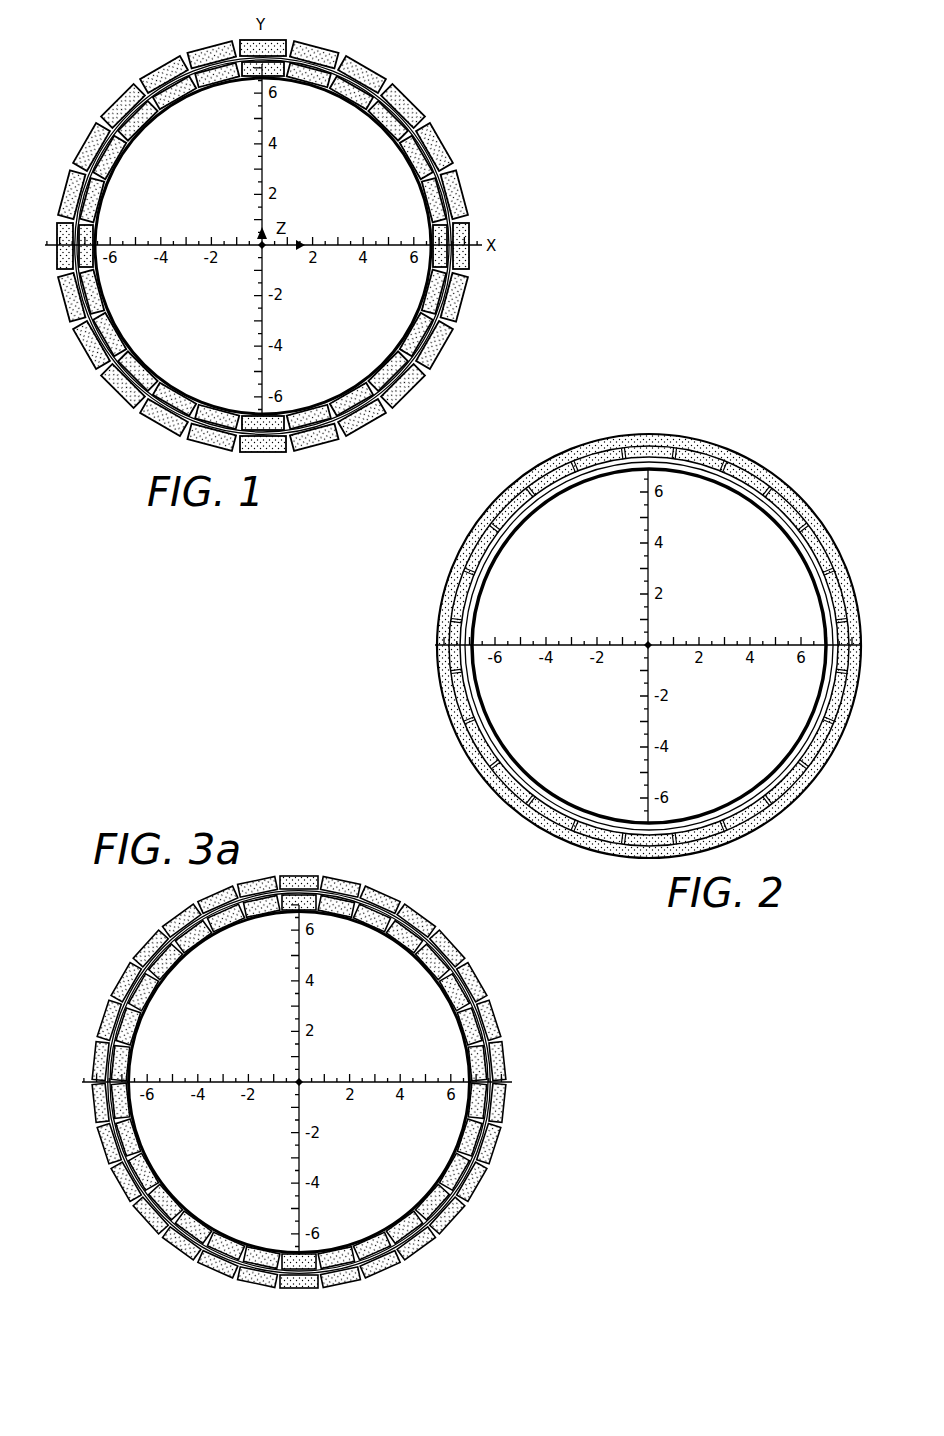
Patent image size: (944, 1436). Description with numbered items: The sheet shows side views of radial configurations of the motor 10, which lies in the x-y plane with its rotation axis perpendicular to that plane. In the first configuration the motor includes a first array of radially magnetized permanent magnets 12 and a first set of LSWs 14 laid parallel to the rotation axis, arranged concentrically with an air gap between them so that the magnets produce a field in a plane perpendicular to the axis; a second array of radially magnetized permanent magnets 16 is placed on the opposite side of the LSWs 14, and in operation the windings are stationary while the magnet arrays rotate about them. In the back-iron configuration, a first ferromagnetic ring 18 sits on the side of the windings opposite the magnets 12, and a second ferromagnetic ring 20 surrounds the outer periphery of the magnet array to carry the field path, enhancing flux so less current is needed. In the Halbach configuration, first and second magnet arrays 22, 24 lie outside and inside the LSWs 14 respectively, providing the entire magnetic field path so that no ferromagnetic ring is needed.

In FIG. 1, the motor 10 is at (286, 229).
In FIG. 2, the motor 10 is at (618, 634).
In FIG. 3A, the motor 10 is at (341, 1065).
In FIG. 1, the first array of permanent magnets 12 is at (434, 138).
In FIG. 2, the first array of permanent magnets 12 is at (480, 537).
In FIG. 1, the first set of LSWs 14 is at (357, 80).
In FIG. 2, the first set of LSWs 14 is at (560, 478).
In FIG. 3A, the first set of LSWs 14 is at (181, 930).
In FIG. 1, the second array of radially magnetized permanent magnets 16 is at (447, 190).
In FIG. 2, the first ferromagnetic ring 18 is at (497, 553).
In FIG. 2, the second ferromagnetic ring 20 is at (440, 668).
In FIG. 3A, the first magnet array 22 is at (383, 908).
In FIG. 3A, the second magnet array 24 is at (428, 960).